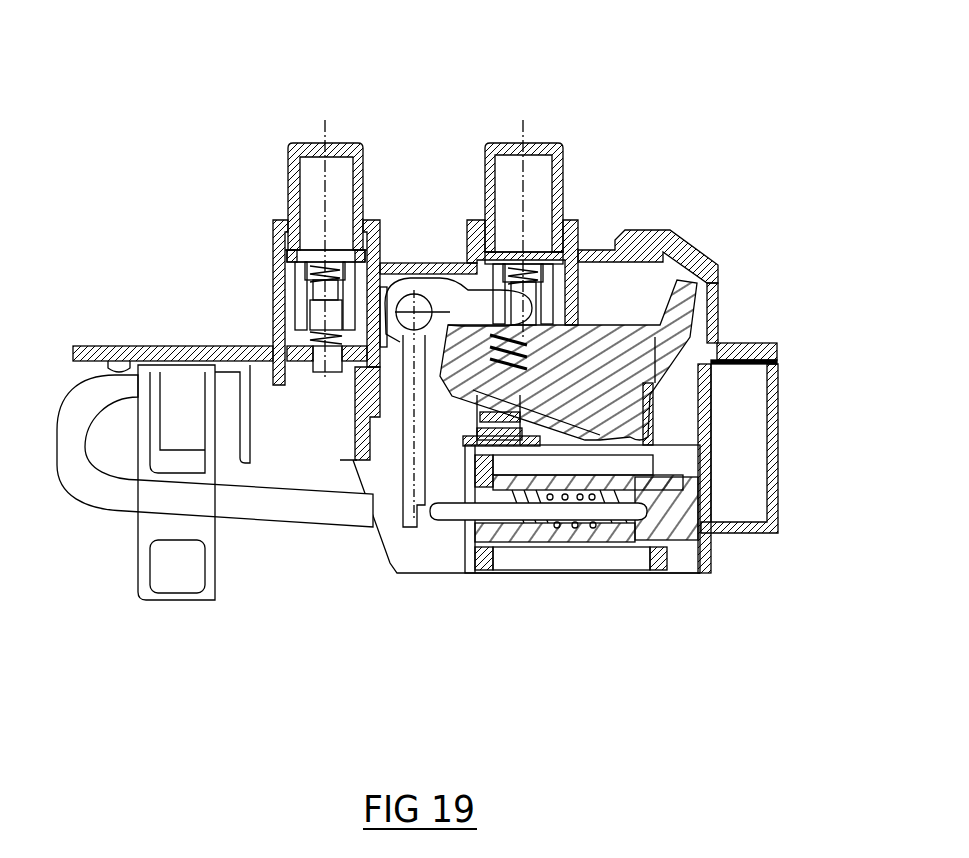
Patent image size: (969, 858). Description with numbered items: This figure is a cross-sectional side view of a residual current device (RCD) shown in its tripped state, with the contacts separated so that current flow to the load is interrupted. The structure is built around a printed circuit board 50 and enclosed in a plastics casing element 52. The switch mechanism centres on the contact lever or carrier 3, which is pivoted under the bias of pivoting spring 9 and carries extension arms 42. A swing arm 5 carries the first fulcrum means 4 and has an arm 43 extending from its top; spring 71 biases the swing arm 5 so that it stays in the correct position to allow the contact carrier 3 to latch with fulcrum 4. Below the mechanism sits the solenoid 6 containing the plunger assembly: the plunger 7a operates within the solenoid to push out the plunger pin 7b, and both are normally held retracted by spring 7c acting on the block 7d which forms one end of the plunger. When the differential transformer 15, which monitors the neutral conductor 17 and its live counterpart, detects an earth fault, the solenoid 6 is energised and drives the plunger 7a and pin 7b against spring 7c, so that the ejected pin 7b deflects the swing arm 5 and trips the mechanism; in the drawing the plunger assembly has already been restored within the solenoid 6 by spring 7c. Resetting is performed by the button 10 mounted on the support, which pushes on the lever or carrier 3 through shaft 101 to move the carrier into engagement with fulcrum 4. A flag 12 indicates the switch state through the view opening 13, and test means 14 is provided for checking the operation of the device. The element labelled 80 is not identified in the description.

The contact lever or carrier 3 is at (655, 424).
The first fulcrum means 4 is at (365, 437).
The swing arm 5 is at (410, 488).
The solenoid 6 is at (560, 557).
The plunger 7a is at (618, 528).
The plunger pin 7b is at (450, 515).
The spring 7c is at (527, 545).
The block 7d is at (638, 520).
The pivoting spring 9 is at (462, 445).
The reset means (button) 10 is at (509, 140).
The flag 12 is at (717, 278).
The view opening 13 is at (655, 228).
The test means 14 is at (308, 140).
The differential transformer 15 is at (170, 577).
The neutral conductor 17 is at (77, 483).
The extension arms 42 is at (540, 313).
The arm 43 is at (466, 300).
The printed circuit board 50 is at (140, 346).
The plastics casing element 52 is at (767, 537).
The spring 71 is at (382, 327).
The wall block 80 is at (368, 388).
The shaft 101 is at (532, 300).